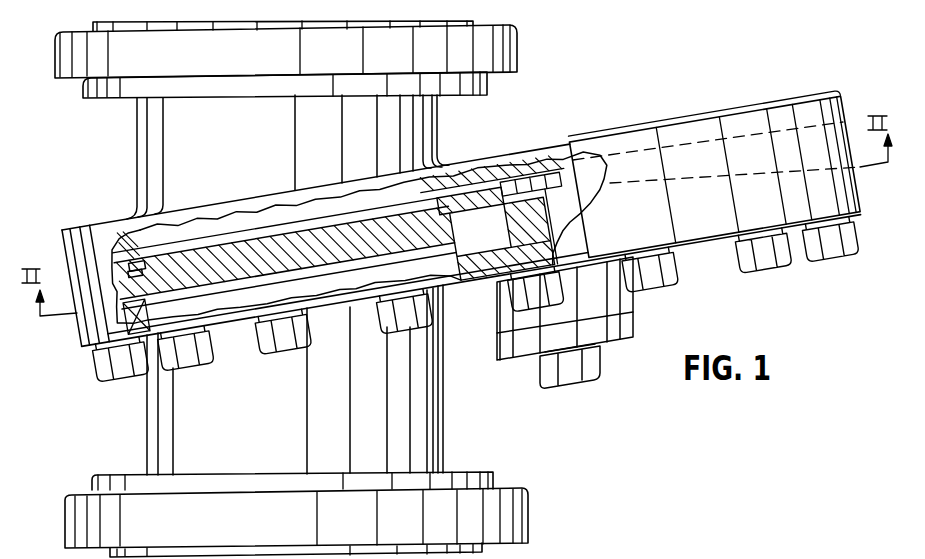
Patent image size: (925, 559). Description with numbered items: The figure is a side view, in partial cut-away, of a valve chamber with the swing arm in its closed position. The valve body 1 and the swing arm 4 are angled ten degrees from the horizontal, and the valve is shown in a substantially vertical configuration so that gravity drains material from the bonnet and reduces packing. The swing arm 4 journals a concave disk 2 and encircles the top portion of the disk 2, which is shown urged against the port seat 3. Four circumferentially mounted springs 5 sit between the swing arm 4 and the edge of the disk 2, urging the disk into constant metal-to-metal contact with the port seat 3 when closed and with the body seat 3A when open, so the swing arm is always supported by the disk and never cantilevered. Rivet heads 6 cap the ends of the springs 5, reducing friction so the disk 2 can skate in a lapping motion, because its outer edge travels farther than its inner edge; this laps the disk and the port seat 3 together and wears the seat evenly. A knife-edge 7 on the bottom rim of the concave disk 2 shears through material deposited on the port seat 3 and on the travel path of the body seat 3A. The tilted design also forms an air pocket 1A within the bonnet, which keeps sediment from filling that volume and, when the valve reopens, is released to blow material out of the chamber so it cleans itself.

The valve body 1 is at (283, 232).
The air pocket 1A is at (690, 160).
The concave disk 2 is at (216, 258).
The port seat 3 is at (427, 257).
The body seat 3A is at (690, 207).
The swing arm 4 is at (112, 258).
The springs 5 is at (136, 262).
The rivet heads 6 is at (156, 268).
The knife-edge 7 is at (143, 300).